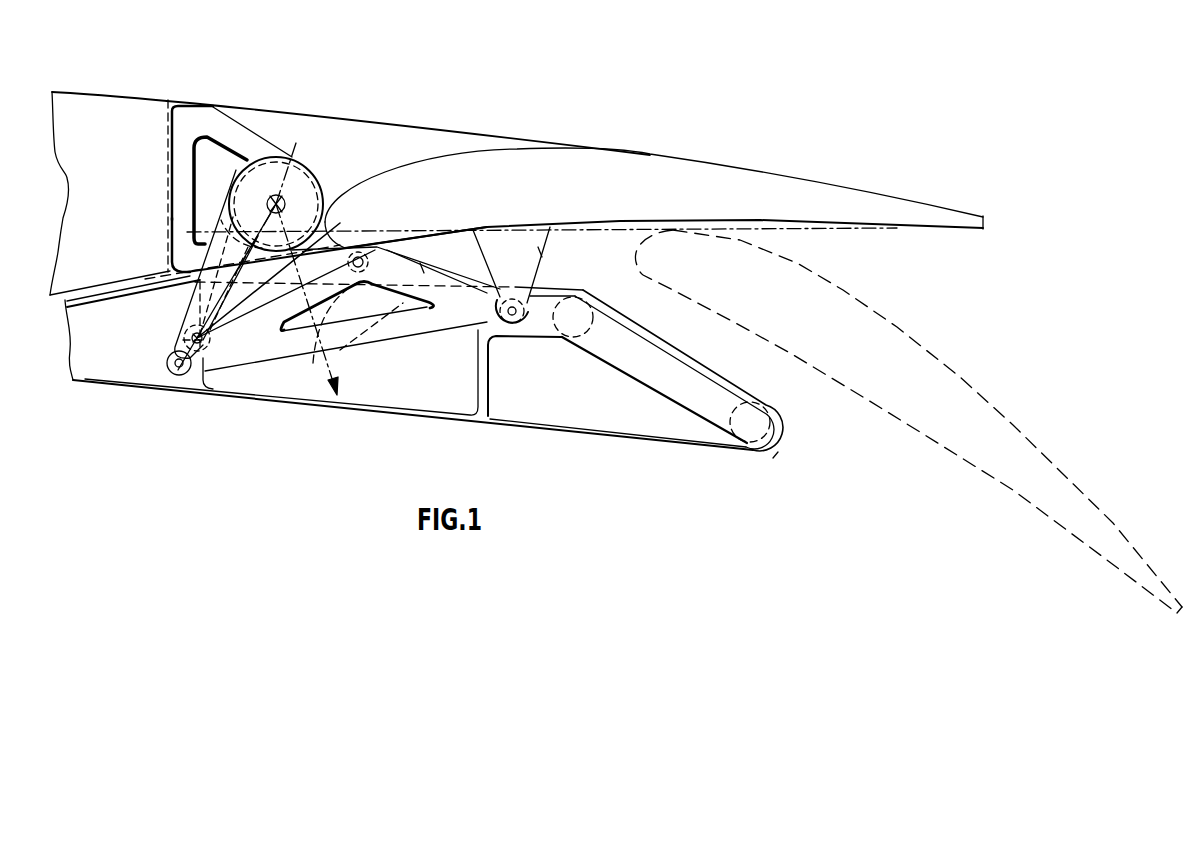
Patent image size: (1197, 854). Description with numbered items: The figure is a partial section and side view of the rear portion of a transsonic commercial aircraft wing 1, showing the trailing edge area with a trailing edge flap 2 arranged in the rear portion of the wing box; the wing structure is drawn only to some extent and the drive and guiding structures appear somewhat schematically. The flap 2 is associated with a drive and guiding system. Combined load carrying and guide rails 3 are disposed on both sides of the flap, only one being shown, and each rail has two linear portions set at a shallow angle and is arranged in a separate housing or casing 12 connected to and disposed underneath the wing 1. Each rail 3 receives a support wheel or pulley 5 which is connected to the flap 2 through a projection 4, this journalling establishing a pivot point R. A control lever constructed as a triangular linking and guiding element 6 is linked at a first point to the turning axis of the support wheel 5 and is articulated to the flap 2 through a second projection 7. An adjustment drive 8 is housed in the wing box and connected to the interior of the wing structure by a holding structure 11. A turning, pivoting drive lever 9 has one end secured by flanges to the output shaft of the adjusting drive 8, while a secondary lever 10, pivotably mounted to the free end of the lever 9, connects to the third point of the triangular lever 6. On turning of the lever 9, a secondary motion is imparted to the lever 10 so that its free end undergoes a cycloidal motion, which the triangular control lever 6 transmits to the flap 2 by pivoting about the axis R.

The wing 1 is at (134, 92).
The trailing edge flap 2 is at (610, 180).
The combined load carrying and guide rail 3 is at (668, 383).
The projection 4 is at (522, 260).
The support wheel or pulley 5 is at (533, 322).
The triangular linking and guiding element 6 is at (390, 330).
The second projection 7 is at (400, 250).
The adjustment drive 8 is at (308, 168).
The drive lever 9 is at (188, 312).
The secondary lever 10 is at (173, 373).
The holding structure 11 is at (223, 133).
The housing or casing 12 is at (773, 455).
The pivot point R is at (512, 317).